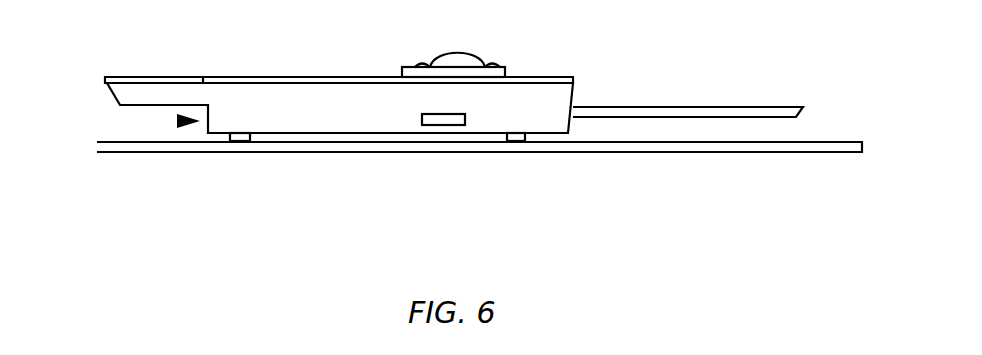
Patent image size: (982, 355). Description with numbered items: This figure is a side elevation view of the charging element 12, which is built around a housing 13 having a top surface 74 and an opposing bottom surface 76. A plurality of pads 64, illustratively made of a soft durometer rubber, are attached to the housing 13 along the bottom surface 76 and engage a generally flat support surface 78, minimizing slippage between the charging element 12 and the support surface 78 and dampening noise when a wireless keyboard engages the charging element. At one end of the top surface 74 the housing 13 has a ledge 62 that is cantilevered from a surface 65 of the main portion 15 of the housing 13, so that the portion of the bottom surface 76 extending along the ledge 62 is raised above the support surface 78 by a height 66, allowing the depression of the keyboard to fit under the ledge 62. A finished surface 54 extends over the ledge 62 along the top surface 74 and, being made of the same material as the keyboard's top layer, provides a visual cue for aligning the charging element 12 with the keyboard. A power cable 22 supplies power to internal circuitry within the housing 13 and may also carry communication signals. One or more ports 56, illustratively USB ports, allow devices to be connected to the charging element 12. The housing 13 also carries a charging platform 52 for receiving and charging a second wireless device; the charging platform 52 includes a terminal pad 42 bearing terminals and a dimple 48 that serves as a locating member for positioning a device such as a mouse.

The charging element 12 is at (264, 220).
The housing 13 is at (568, 78).
The main portion 15 is at (522, 98).
The power cable 22 is at (685, 117).
The terminal pad 42 is at (408, 67).
The dimple 48 is at (448, 53).
The charging platform 52 is at (298, 77).
The finished surface 54 is at (163, 77).
The ports 56 is at (445, 125).
The ledge 62 is at (138, 106).
The pads 64 is at (243, 142).
The surface 65 is at (200, 120).
The height 66 is at (177, 121).
The top surface 74 is at (245, 77).
The bottom surface 76 is at (468, 133).
The support surface 78 is at (808, 142).